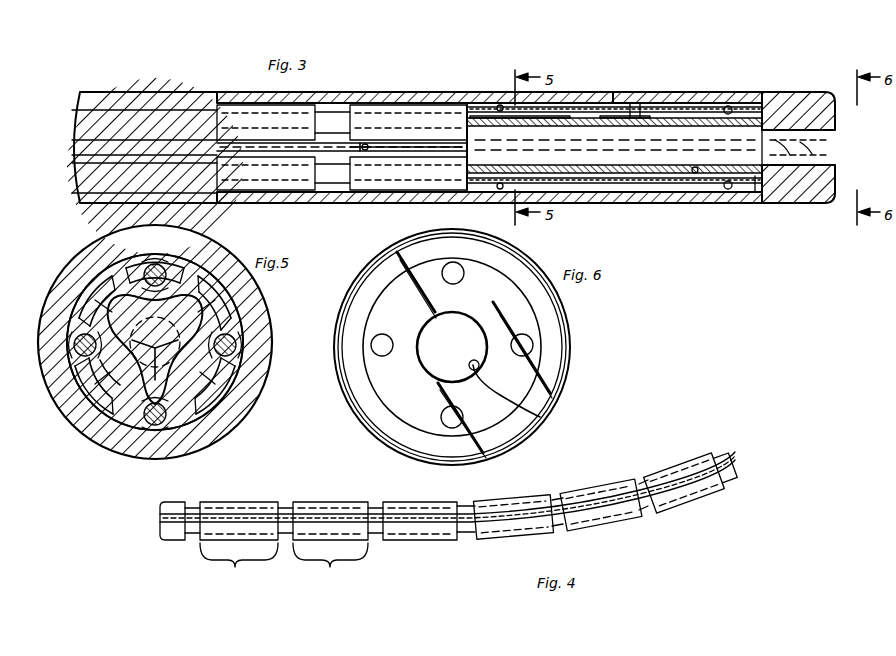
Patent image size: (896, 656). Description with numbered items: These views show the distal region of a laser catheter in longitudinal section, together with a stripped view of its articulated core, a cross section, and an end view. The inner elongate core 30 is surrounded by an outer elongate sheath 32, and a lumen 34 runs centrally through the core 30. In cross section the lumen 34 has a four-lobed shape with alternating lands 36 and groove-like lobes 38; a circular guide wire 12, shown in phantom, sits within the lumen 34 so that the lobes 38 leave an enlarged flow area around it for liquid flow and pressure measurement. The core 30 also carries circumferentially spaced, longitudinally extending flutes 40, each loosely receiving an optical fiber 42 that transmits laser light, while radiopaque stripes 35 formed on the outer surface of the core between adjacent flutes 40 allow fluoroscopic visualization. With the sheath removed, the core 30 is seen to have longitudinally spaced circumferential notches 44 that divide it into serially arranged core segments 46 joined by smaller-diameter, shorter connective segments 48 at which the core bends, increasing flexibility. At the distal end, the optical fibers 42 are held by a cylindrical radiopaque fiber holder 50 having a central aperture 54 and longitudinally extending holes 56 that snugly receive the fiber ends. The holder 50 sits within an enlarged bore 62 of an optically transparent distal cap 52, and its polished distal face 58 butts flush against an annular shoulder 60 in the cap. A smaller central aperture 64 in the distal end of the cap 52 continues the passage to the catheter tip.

In FIG. 5, the guide wire 12 is at (96, 392).
In FIG. 3, the inner elongate core 30 is at (244, 98).
In FIG. 5, the inner elongate core 30 is at (272, 318).
In FIG. 4, the inner elongate core 30 is at (420, 540).
In FIG. 3, the outer elongate sheath 32 is at (369, 94).
In FIG. 5, the outer elongate sheath 32 is at (226, 246).
In FIG. 3, the lumen 34 is at (650, 158).
In FIG. 5, the lumen 34 is at (236, 396).
In FIG. 5, the radiopaque stripes 35 is at (100, 272).
In FIG. 5, the lands 36 is at (128, 322).
In FIG. 5, the lobes 38 is at (140, 360).
In FIG. 3, the flutes 40 is at (567, 118).
In FIG. 5, the flutes 40 is at (144, 262).
In FIG. 3, the optical fibers 42 is at (600, 110).
In FIG. 5, the optical fibers 42 is at (162, 266).
In FIG. 6, the optical fibers 42 is at (464, 270).
In FIG. 4, the circumferential notches 44 is at (288, 502).
In FIG. 4, the core segments 46 is at (284, 565).
In FIG. 4, the connective segments 48 is at (377, 503).
In FIG. 3, the fiber holder 50 is at (706, 102).
In FIG. 6, the fiber holder 50 is at (489, 347).
In FIG. 3, the distal cap 52 is at (786, 90).
In FIG. 6, the distal cap 52 is at (568, 380).
In FIG. 3, the central aperture 54 is at (695, 173).
In FIG. 3, the longitudinally extending holes 56 is at (733, 107).
In FIG. 3, the distal face 58 is at (802, 100).
In FIG. 3, the annular shoulder 60 is at (757, 186).
In FIG. 3, the enlarged bore 62 is at (636, 105).
In FIG. 3, the central aperture 64 is at (838, 146).
In FIG. 6, the central aperture 64 is at (532, 414).